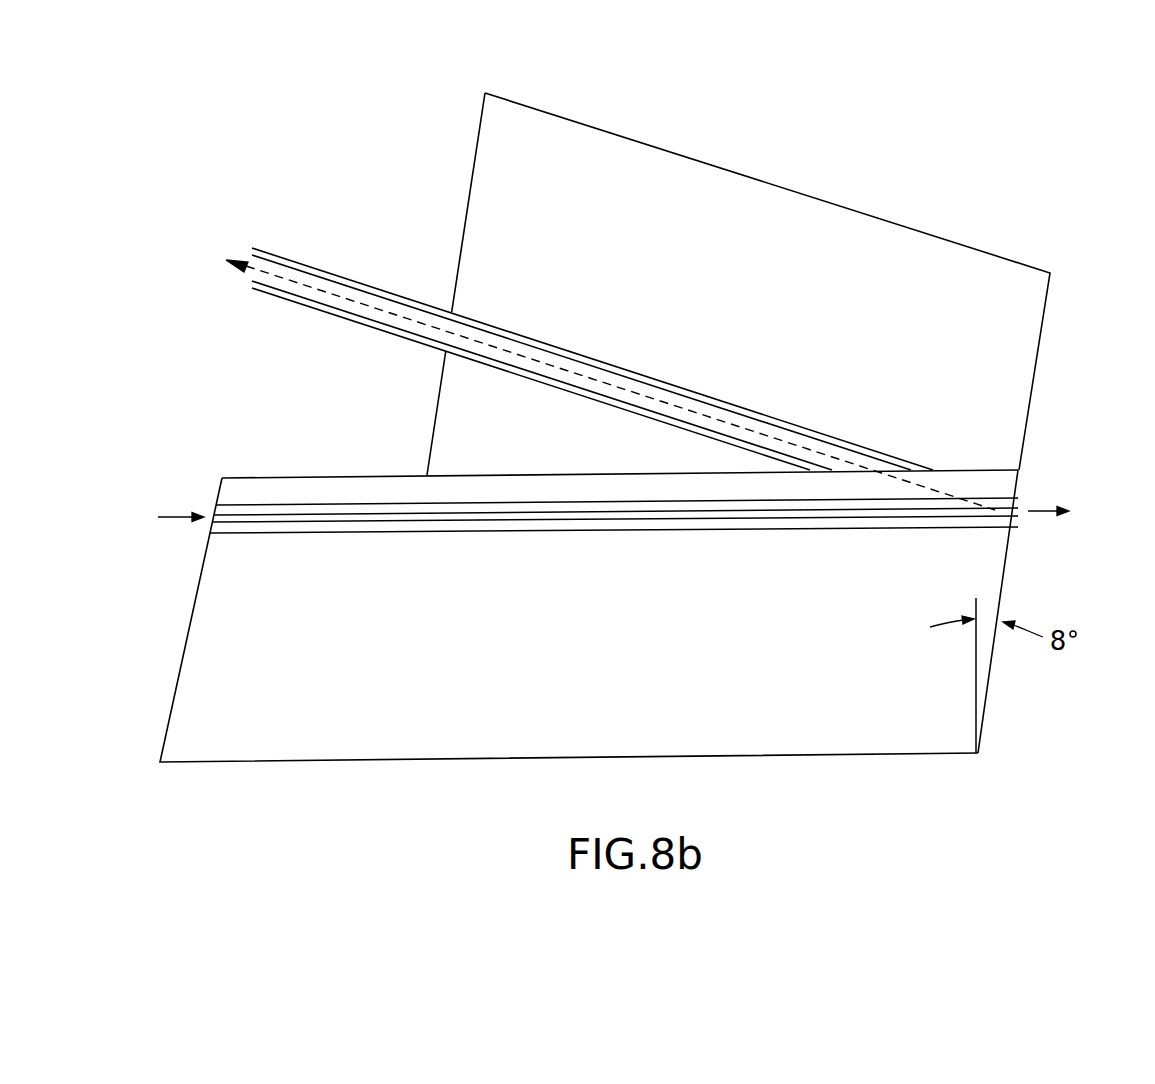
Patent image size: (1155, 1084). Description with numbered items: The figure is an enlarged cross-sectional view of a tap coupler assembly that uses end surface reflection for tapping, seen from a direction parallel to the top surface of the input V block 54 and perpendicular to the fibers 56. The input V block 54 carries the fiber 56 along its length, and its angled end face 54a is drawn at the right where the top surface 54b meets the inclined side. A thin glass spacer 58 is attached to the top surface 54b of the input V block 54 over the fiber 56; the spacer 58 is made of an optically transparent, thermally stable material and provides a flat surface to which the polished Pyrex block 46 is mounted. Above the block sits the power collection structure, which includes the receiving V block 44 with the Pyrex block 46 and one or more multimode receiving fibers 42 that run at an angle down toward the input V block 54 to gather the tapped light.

The multimode receiving fiber 42 is at (327, 312).
The receiving V block 44 is at (835, 205).
The Pyrex block 46 is at (458, 410).
The input V block 54 is at (772, 758).
The angled end face of block 54a is at (1005, 579).
The top surface of the input V block 54b is at (325, 505).
The fiber 56 is at (278, 507).
The glass spacer 58 is at (688, 488).